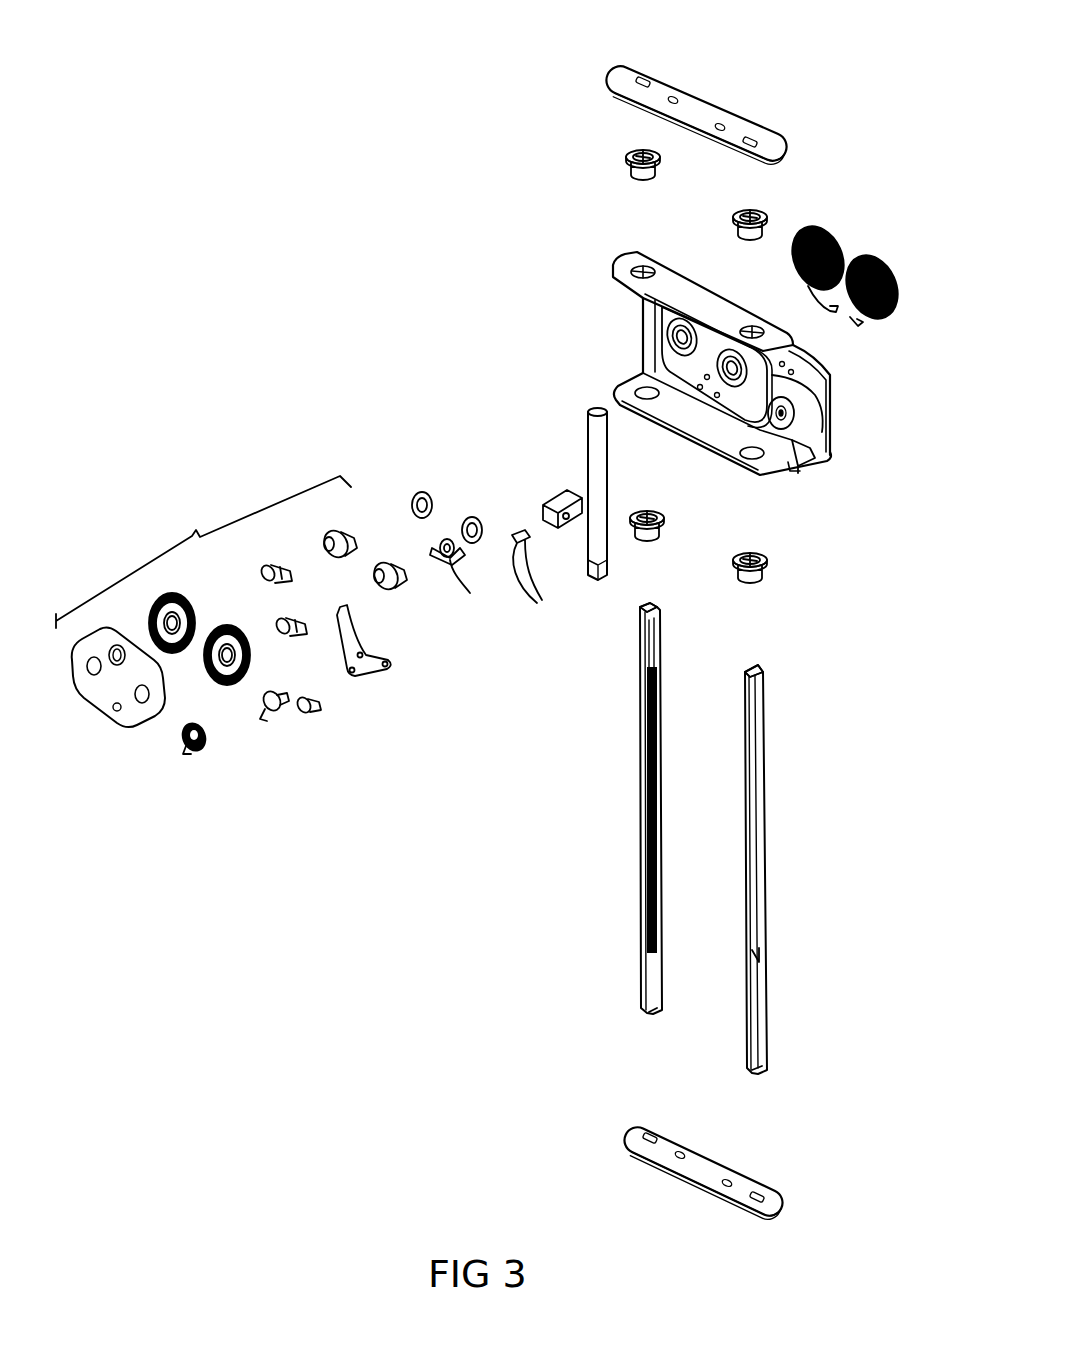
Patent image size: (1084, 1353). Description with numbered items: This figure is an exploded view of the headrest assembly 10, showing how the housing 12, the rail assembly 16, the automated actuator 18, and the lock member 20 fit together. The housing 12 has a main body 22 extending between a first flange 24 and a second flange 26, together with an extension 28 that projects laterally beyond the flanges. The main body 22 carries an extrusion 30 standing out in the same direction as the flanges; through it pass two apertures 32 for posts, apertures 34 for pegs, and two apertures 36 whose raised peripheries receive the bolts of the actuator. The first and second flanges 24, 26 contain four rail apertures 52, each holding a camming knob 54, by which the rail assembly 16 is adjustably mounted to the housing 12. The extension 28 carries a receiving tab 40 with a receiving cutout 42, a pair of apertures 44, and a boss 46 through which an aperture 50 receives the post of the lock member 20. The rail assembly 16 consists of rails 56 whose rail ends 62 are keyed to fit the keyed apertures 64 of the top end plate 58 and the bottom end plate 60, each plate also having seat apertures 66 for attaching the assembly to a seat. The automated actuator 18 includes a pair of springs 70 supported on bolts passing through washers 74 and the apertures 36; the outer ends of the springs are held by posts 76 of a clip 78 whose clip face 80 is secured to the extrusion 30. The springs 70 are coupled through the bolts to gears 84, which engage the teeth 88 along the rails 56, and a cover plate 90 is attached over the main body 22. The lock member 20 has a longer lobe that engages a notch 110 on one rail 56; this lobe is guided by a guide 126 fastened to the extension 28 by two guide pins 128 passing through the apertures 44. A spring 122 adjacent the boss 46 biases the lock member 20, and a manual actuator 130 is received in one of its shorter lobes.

The headrest assembly 10 is at (215, 236).
The housing 12 is at (634, 330).
The rail assembly 16 is at (833, 797).
The automated actuator 18 is at (203, 552).
The lock member 20 is at (368, 680).
The main body 22 is at (653, 352).
The first flange 24 is at (693, 307).
The second flange 26 is at (627, 387).
The extension 28 is at (828, 452).
The extrusion 30 is at (737, 400).
The apertures 32 is at (700, 389).
The apertures 34 is at (650, 357).
The apertures 36 is at (670, 330).
The receiving tab 40 is at (808, 461).
The receiving cutout 42 is at (795, 467).
The apertures 44 is at (793, 372).
The boss 46 is at (798, 408).
The aperture 50 is at (820, 424).
The rail apertures 52 is at (638, 268).
The camming knobs 54 is at (626, 158).
The rails 56 is at (637, 950).
The top end plate 58 is at (697, 110).
The bottom end plate 60 is at (703, 1163).
The rail ends 62 is at (657, 617).
The keyed apertures 64 is at (644, 80).
The seat apertures 66 is at (669, 103).
The springs 70 is at (835, 232).
The washers 74 is at (420, 492).
The posts 76 is at (458, 576).
The clip 78 is at (447, 539).
The clip face 80 is at (440, 548).
The gears 84 is at (235, 628).
The teeth 88 is at (657, 702).
The cover plate 90 is at (97, 708).
The notch 110 is at (637, 888).
The spring 122 is at (198, 752).
The guide 126 is at (567, 525).
The guide pins 128 is at (537, 581).
The manual actuator 130 is at (593, 472).